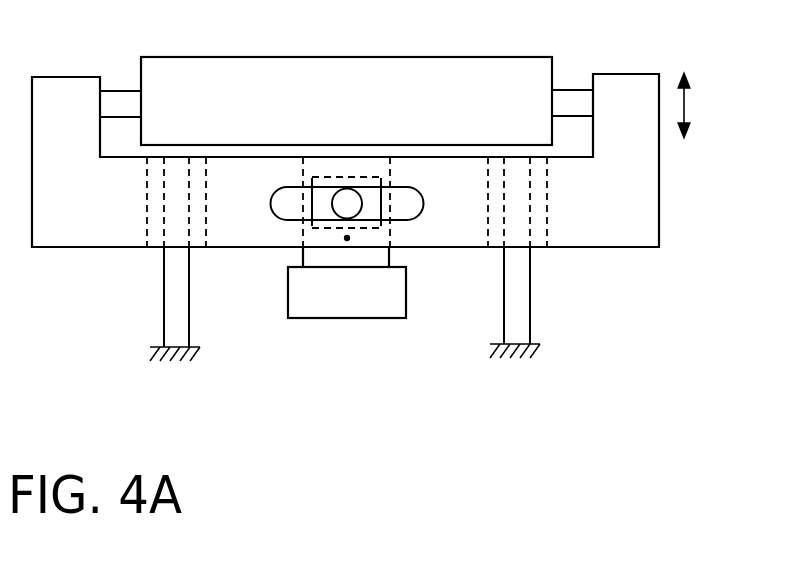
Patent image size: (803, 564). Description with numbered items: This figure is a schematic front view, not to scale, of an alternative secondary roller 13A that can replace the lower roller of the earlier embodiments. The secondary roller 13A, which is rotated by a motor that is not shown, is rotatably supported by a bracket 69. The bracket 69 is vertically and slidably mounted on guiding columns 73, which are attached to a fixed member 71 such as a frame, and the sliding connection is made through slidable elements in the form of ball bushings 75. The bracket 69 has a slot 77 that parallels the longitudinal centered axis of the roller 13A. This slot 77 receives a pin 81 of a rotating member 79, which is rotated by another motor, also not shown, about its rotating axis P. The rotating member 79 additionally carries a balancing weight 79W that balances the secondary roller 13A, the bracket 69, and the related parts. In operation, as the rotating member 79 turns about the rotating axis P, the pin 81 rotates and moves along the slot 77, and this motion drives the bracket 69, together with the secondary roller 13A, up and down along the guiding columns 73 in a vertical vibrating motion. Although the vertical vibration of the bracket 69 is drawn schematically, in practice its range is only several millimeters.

The secondary roller 13A is at (459, 70).
The bracket 69 is at (659, 190).
The fixed member 71 is at (148, 354).
The guiding columns 73 is at (177, 306).
The ball bushings 75 is at (145, 204).
The slot 77 is at (273, 205).
The rotating member 79 is at (384, 255).
The balancing weight 79W is at (329, 303).
The pin 81 is at (347, 198).
The rotating axis P is at (347, 238).